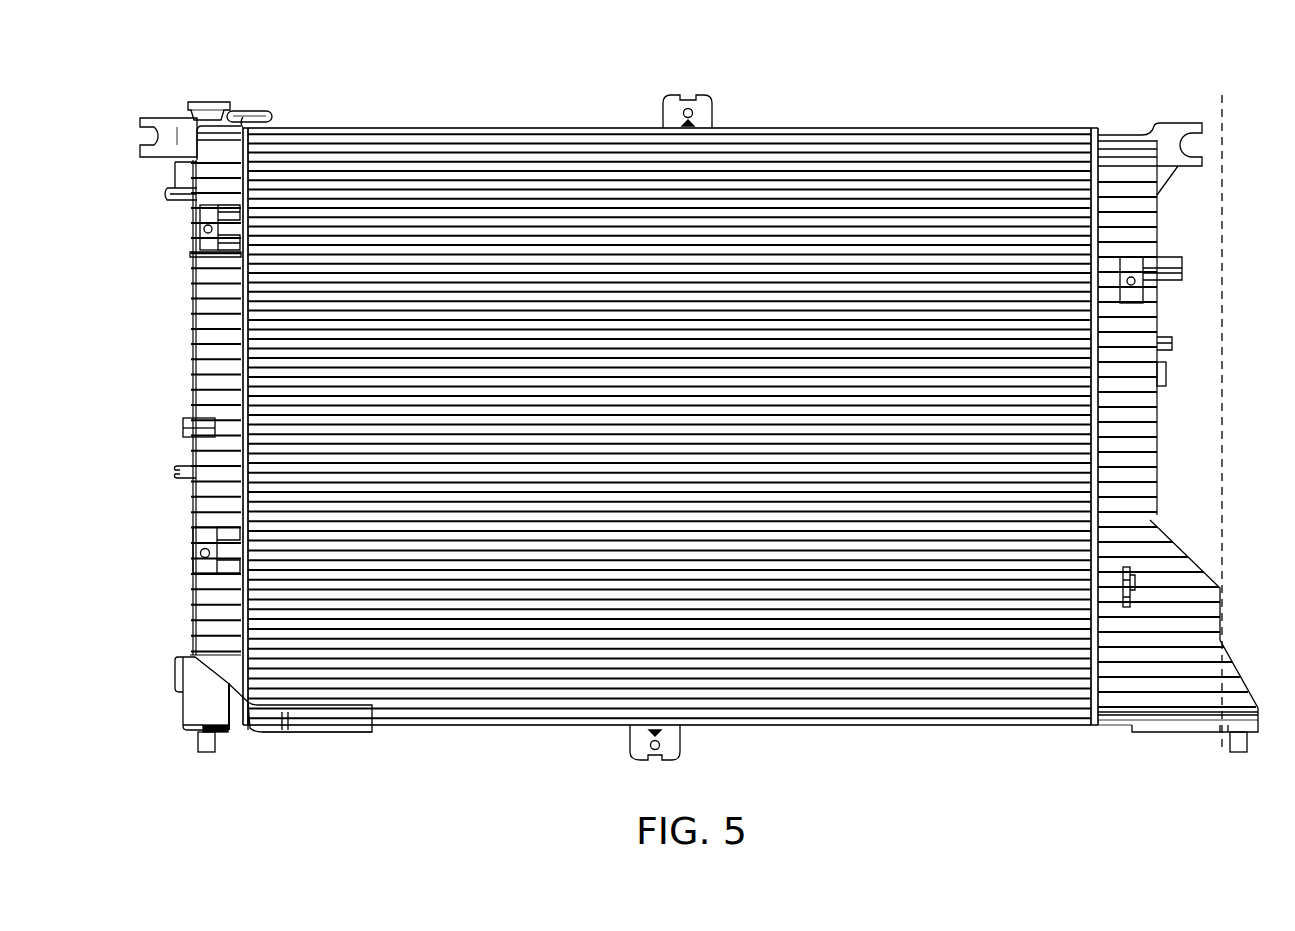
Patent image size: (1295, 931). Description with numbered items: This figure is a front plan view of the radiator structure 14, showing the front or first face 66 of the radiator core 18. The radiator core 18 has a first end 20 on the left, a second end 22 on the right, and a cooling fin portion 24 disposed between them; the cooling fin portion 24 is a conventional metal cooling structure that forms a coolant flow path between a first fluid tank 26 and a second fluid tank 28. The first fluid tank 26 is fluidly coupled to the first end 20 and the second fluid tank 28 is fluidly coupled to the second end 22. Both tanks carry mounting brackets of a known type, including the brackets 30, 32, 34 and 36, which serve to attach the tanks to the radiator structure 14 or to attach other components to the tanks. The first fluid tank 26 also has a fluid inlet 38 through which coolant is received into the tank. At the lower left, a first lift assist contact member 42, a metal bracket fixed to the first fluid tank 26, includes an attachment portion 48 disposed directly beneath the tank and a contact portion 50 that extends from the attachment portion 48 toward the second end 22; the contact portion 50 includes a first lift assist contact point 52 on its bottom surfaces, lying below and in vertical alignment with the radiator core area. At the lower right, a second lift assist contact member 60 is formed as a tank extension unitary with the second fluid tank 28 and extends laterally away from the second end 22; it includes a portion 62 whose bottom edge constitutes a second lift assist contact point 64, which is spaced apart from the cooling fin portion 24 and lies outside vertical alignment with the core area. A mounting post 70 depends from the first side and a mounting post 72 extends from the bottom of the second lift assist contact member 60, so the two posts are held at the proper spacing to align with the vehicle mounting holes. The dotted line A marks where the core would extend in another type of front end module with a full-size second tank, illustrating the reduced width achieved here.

The radiator structure 14 is at (956, 119).
The radiator core 18 is at (891, 728).
The first end 20 is at (244, 126).
The second end 22 is at (1094, 130).
The cooling fin portion 24 is at (492, 686).
The first fluid tank 26 is at (202, 398).
The second fluid tank 28 is at (1182, 421).
The mounting bracket 30 is at (180, 118).
The mounting bracket 32 is at (203, 231).
The mounting bracket 34 is at (1172, 123).
The mounting bracket 36 is at (1134, 270).
The fluid inlet 38 is at (212, 101).
The first lift assist contact member 42 is at (167, 711).
The attachment portion 48 is at (232, 735).
The contact portion 50 is at (312, 748).
The first lift assist contact point 52 is at (345, 735).
The second lift assist contact member 60 is at (1222, 623).
The portion 62 is at (1165, 600).
The second lift assist contact point 64 is at (1165, 735).
The first face 66 is at (585, 672).
The mounting post 70 is at (206, 753).
The mounting post 72 is at (1237, 753).
The dotted line A is at (1223, 343).